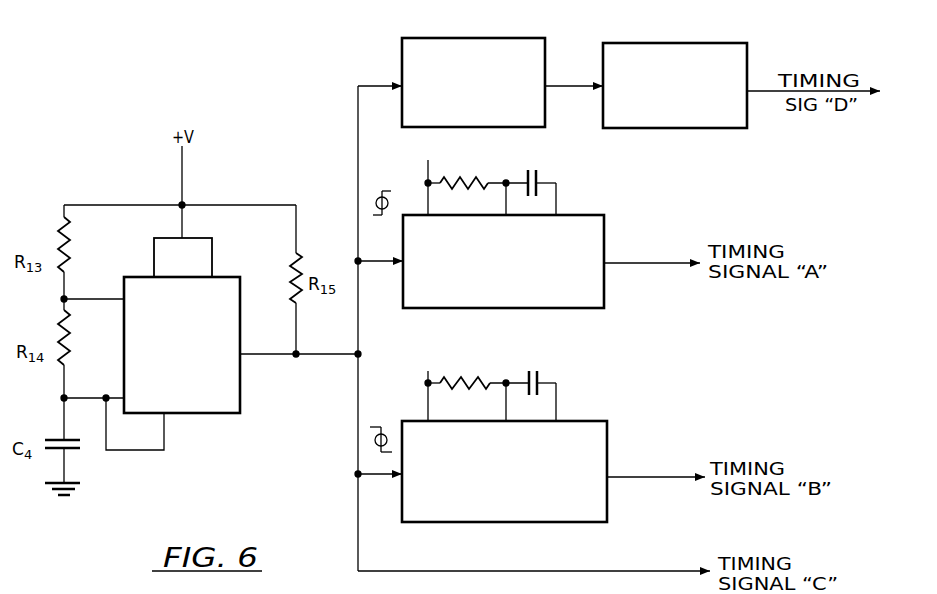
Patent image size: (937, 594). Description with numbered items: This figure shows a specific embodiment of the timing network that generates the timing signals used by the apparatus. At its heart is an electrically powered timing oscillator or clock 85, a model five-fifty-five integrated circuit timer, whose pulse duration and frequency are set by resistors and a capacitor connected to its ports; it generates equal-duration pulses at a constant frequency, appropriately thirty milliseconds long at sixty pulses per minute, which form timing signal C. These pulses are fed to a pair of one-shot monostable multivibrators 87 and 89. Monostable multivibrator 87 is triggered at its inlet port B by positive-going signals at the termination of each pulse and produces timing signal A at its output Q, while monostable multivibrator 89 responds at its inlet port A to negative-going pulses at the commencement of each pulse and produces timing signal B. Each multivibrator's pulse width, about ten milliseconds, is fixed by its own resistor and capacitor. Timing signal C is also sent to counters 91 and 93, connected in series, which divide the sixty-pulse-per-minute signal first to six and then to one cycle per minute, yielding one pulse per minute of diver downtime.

The timing oscillator 85 is at (225, 413).
The monostable multivibrator 87 is at (580, 308).
The monostable multivibrator 89 is at (583, 512).
The counter 91 is at (402, 62).
The counter 93 is at (688, 128).